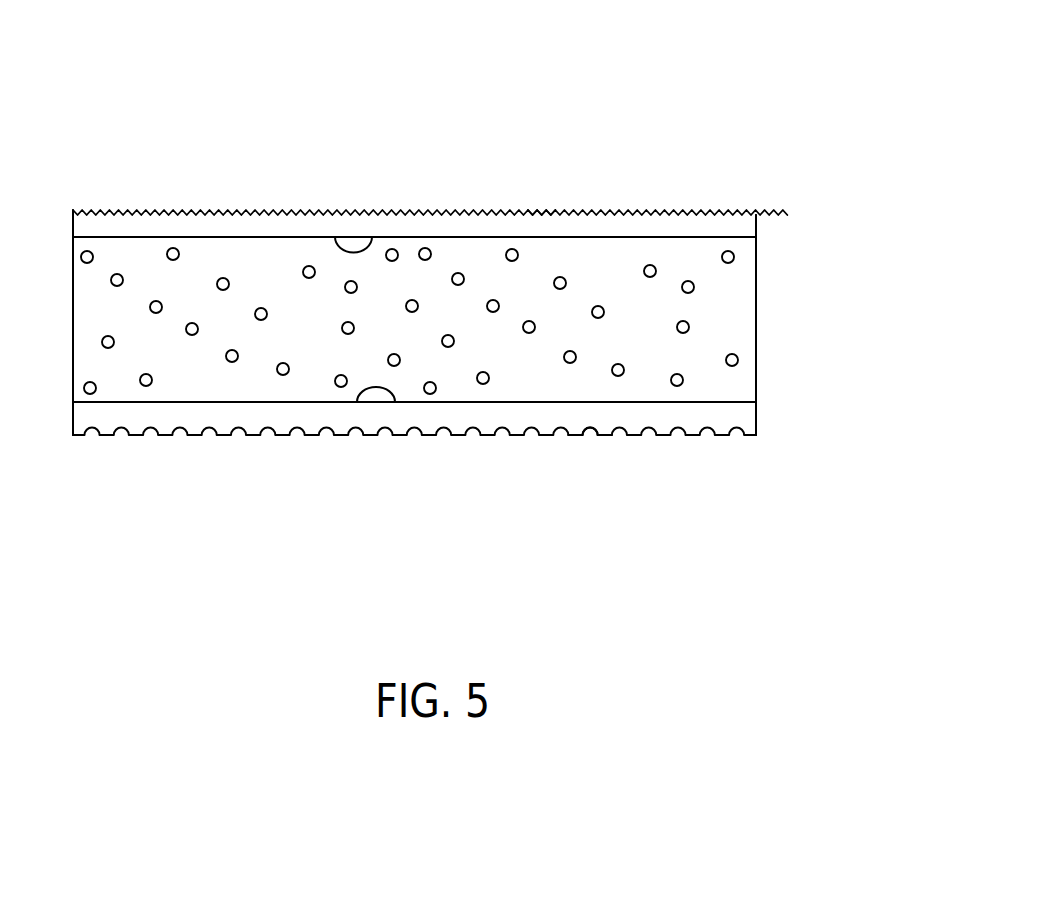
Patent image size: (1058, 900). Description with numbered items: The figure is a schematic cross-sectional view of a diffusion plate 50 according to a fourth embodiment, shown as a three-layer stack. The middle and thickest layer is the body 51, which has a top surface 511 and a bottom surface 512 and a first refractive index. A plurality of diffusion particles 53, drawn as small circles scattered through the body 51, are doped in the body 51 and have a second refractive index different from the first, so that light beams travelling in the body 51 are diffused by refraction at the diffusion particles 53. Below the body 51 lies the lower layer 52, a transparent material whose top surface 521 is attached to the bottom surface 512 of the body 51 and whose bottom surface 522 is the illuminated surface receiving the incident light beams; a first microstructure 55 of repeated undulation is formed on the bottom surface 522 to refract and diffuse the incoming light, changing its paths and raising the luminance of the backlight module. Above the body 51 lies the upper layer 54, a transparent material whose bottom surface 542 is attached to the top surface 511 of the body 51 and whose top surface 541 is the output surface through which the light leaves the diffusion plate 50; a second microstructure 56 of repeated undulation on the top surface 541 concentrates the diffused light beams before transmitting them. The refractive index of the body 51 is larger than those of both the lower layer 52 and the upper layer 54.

The diffusion plate 50 is at (785, 117).
The body 51 is at (733, 298).
The top surface of the body 511 is at (712, 237).
The bottom surface of the body 512 is at (692, 402).
The lower layer 52 is at (735, 418).
The top surface of the lower layer 521 is at (357, 402).
The bottom surface of the lower layer 522 is at (570, 434).
The diffusion particles 53 is at (740, 358).
The upper layer 54 is at (753, 230).
The top surface of the upper layer 541 is at (575, 213).
The bottom surface of the upper layer 542 is at (335, 237).
The first microstructure 55 is at (583, 433).
The second microstructure 56 is at (542, 213).